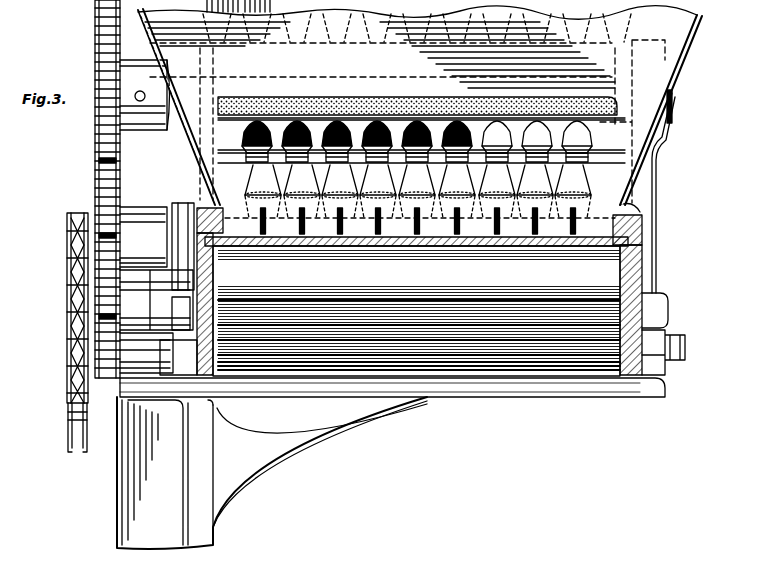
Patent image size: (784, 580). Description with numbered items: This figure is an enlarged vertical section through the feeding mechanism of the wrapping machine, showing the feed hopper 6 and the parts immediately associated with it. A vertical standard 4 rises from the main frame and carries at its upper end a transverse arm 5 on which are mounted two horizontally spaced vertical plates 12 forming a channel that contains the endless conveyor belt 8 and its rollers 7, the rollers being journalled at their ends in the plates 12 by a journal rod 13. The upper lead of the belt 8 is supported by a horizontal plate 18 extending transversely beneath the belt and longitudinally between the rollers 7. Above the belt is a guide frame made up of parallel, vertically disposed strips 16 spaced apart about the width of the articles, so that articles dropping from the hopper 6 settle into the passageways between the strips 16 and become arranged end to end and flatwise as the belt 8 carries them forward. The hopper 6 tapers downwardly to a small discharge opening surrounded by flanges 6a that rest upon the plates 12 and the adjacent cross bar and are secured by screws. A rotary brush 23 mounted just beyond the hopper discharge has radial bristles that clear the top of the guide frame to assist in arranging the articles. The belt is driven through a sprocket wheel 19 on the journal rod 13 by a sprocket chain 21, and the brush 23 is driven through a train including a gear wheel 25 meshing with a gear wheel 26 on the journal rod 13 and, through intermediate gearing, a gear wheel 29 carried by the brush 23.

The vertical standard 4 is at (162, 532).
The transverse arm 5 is at (440, 392).
The feed hopper 6 is at (655, 140).
The flange 6a is at (195, 208).
The roller 7 is at (595, 273).
The conveyor belt 8 is at (472, 240).
The vertical plate 12 is at (627, 260).
The journal rod 13 is at (419, 316).
The vertical strip 16 is at (410, 231).
The horizontal plate 18 is at (478, 256).
The sprocket wheel 19 is at (67, 290).
The sprocket chain 21 is at (68, 430).
The brush 23 is at (553, 113).
The gear wheel 25 is at (113, 254).
The gear wheel 26 is at (120, 354).
The gear wheel 29 is at (95, 125).